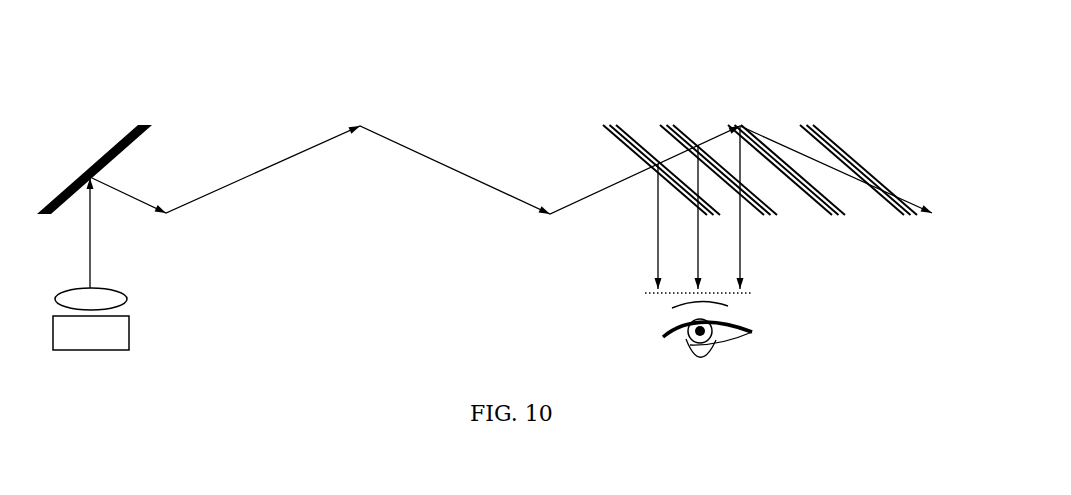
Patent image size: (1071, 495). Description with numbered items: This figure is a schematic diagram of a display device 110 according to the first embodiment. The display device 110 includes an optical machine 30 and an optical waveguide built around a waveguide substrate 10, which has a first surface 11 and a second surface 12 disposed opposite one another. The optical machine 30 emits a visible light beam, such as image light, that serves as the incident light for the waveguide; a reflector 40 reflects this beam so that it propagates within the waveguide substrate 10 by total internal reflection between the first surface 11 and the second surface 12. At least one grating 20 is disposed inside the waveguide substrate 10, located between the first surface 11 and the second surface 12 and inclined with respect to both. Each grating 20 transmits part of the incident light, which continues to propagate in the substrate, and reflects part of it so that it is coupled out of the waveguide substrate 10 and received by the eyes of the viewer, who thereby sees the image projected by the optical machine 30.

The display device 110 is at (81, 25).
The waveguide substrate 10 is at (237, 142).
The first surface 11 is at (455, 123).
The second surface 12 is at (392, 216).
The grating 20 is at (840, 148).
The optical machine 30 is at (138, 311).
The reflector 40 is at (116, 142).